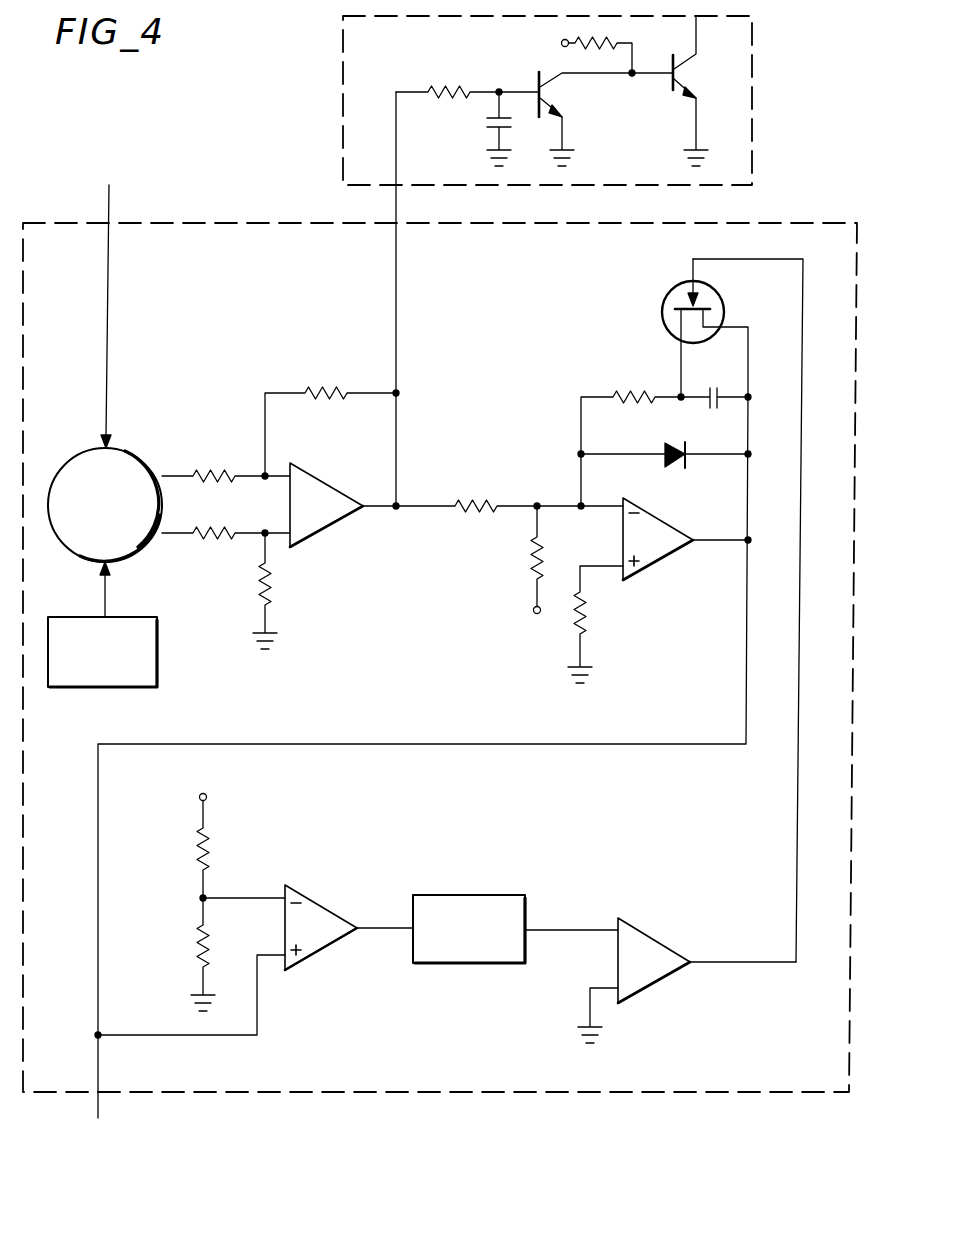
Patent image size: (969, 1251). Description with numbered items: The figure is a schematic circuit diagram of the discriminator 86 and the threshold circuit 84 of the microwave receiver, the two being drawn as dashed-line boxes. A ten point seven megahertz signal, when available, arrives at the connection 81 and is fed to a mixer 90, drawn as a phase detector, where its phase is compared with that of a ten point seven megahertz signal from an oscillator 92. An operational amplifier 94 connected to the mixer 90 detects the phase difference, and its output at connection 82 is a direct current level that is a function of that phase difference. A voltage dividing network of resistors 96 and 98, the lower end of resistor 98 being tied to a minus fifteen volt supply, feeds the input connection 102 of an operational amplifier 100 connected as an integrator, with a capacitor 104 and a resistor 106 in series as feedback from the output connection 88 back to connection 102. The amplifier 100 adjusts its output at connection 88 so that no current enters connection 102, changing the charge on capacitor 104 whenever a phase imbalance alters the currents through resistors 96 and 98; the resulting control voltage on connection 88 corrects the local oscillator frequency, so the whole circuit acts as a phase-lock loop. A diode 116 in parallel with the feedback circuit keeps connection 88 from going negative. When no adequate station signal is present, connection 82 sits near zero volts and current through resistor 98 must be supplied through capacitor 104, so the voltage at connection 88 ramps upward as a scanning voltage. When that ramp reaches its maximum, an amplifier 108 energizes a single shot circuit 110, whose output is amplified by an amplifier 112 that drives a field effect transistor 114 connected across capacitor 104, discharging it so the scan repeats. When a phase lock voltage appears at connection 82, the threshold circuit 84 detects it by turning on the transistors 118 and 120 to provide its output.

The connection 81 is at (111, 200).
The connection 82 is at (396, 440).
The threshold circuit 84 is at (343, 58).
The discriminator 86 is at (272, 223).
The connection 88 is at (743, 635).
The mixer 90 is at (137, 453).
The oscillator 92 is at (158, 663).
The operational amplifier 94 is at (332, 528).
The resistor 96 is at (472, 498).
The resistor 98 is at (532, 552).
The operational amplifier 100 is at (663, 560).
The input connection 102 is at (555, 500).
The capacitor 104 is at (740, 388).
The resistor 106 is at (633, 387).
The amplifier 108 is at (310, 900).
The single shot circuit 110 is at (480, 895).
The amplifier 112 is at (652, 933).
The field effect transistor 114 is at (670, 289).
The diode 116 is at (681, 468).
The transistor 118 is at (537, 76).
The transistor 120 is at (672, 93).